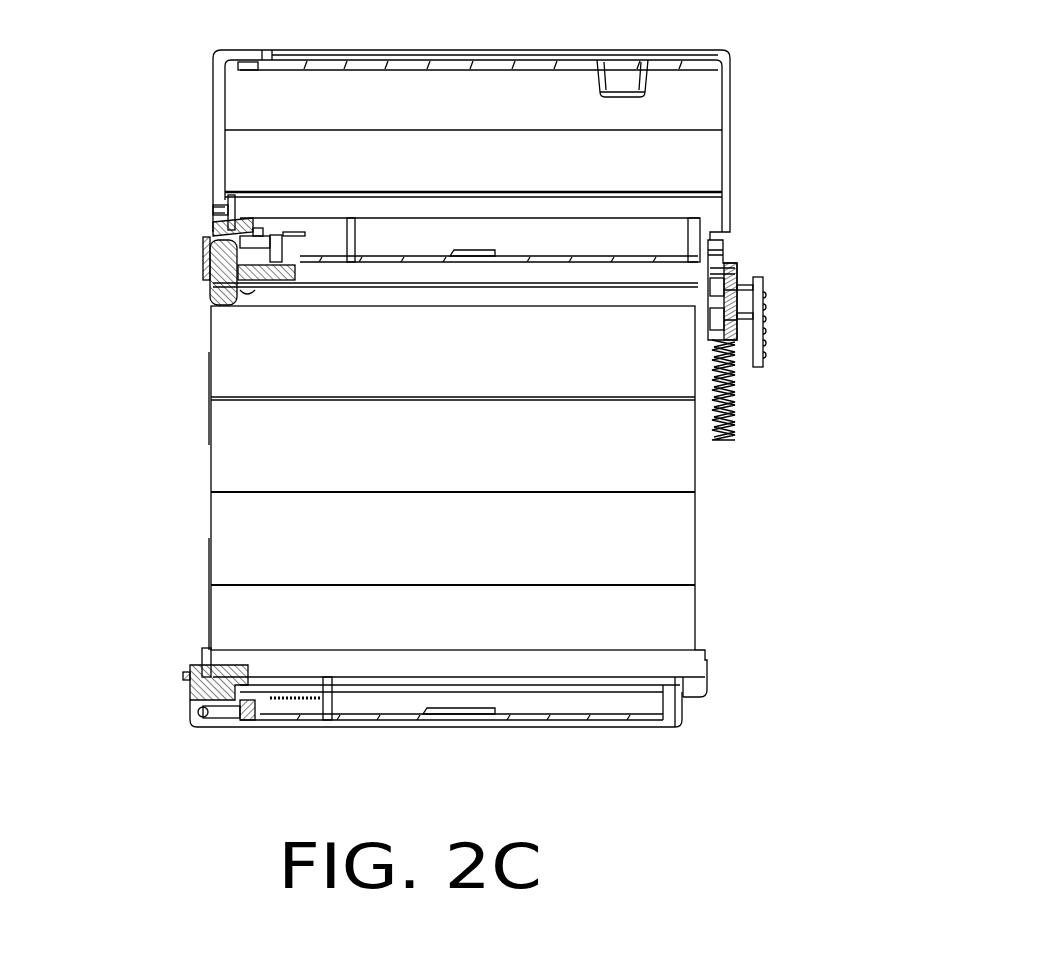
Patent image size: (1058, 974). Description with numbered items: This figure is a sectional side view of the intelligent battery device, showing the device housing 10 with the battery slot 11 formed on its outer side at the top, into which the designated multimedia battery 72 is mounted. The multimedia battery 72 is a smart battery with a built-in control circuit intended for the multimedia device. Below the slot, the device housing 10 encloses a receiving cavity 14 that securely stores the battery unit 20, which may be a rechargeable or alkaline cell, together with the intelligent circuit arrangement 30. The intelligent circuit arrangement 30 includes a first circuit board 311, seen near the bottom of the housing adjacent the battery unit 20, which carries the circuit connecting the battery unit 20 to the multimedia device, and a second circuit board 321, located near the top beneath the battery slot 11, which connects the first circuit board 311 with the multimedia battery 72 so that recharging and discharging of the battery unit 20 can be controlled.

The device housing 10 is at (778, 235).
The battery slot 11 is at (760, 186).
The receiving cavity 14 is at (676, 536).
The battery unit 20 is at (622, 640).
The intelligent circuit arrangement 30 is at (170, 209).
The multimedia battery 72 is at (682, 100).
The first circuit board 311 is at (593, 690).
The second circuit board 321 is at (345, 285).